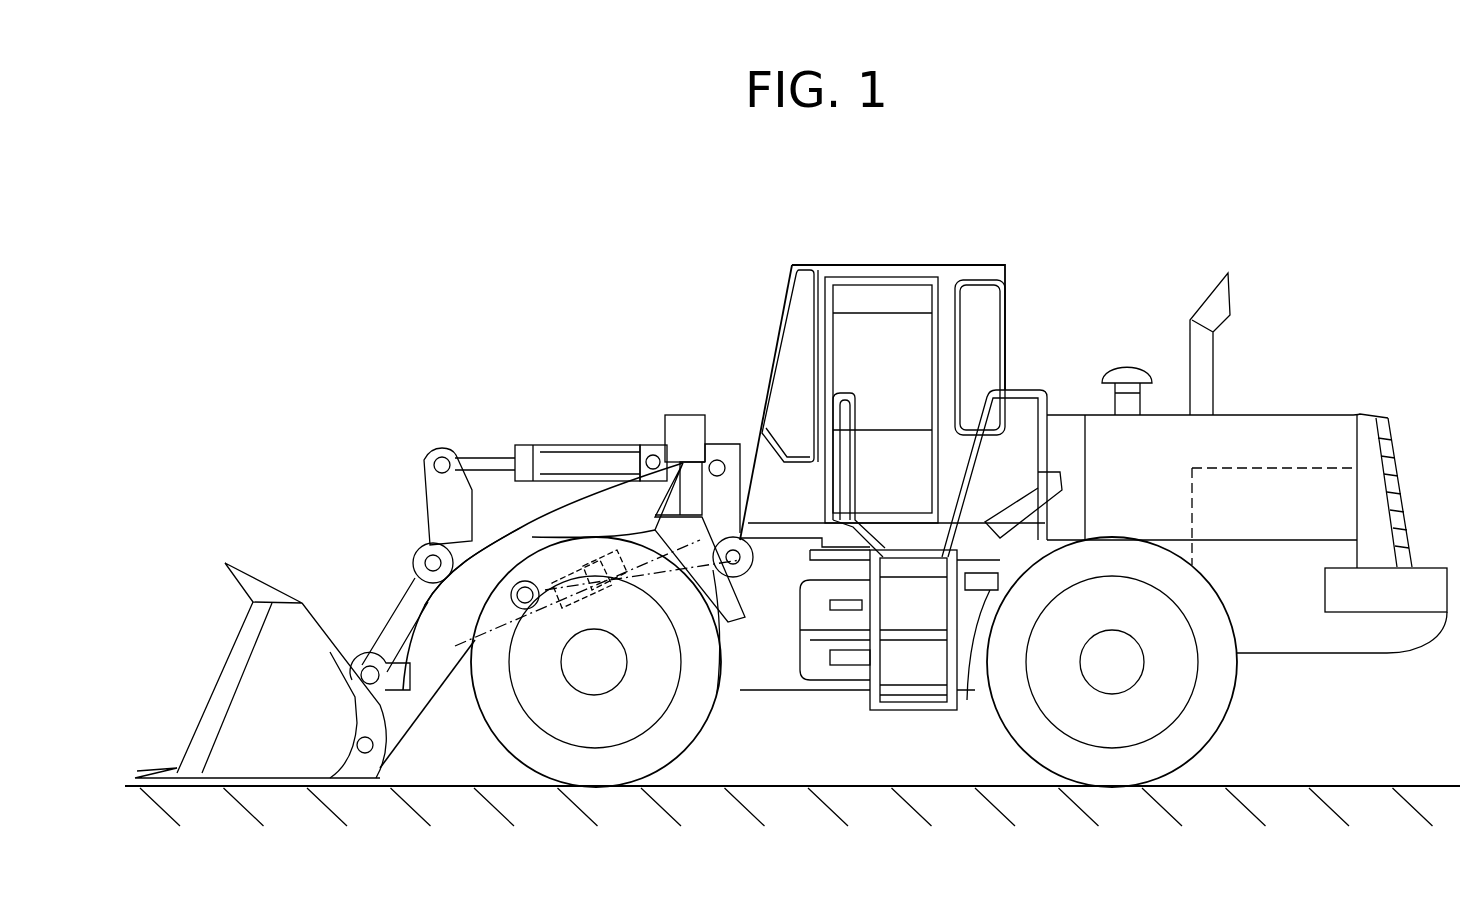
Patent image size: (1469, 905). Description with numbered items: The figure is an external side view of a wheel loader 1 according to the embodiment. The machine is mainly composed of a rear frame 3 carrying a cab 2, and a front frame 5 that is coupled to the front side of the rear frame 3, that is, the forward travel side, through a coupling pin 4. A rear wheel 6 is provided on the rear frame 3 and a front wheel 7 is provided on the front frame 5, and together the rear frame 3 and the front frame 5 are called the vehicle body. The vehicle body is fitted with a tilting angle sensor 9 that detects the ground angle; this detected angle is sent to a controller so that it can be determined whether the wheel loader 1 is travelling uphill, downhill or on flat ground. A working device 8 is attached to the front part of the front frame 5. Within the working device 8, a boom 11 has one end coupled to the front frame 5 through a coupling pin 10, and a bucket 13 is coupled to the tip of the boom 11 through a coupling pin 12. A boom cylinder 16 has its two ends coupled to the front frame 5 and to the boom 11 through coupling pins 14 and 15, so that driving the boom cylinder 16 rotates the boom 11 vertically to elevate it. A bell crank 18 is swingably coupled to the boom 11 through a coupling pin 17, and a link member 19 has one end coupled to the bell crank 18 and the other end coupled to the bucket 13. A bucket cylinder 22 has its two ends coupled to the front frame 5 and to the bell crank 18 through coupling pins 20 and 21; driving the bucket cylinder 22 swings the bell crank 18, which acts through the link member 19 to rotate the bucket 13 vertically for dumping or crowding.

The wheel loader 1 is at (801, 252).
The cab 2 is at (950, 262).
The rear frame 3 is at (1305, 645).
The coupling pin 4 is at (845, 600).
The front frame 5 is at (780, 682).
The rear wheel 6 is at (1200, 730).
The front wheel 7 is at (505, 718).
The working device 8 is at (435, 443).
The tilting angle sensor 9 is at (990, 682).
The coupling pin 10 is at (720, 458).
The boom 11 is at (440, 622).
The coupling pin 12 is at (377, 758).
The bucket 13 is at (250, 695).
The coupling pin 14 is at (747, 688).
The coupling pin 15 is at (527, 590).
The boom cylinder 16 is at (712, 690).
The coupling pin 17 is at (425, 555).
The bell crank 18 is at (425, 490).
The link member 19 is at (397, 665).
The coupling pin 20 is at (655, 452).
The coupling pin 21 is at (450, 455).
The bucket cylinder 22 is at (575, 455).